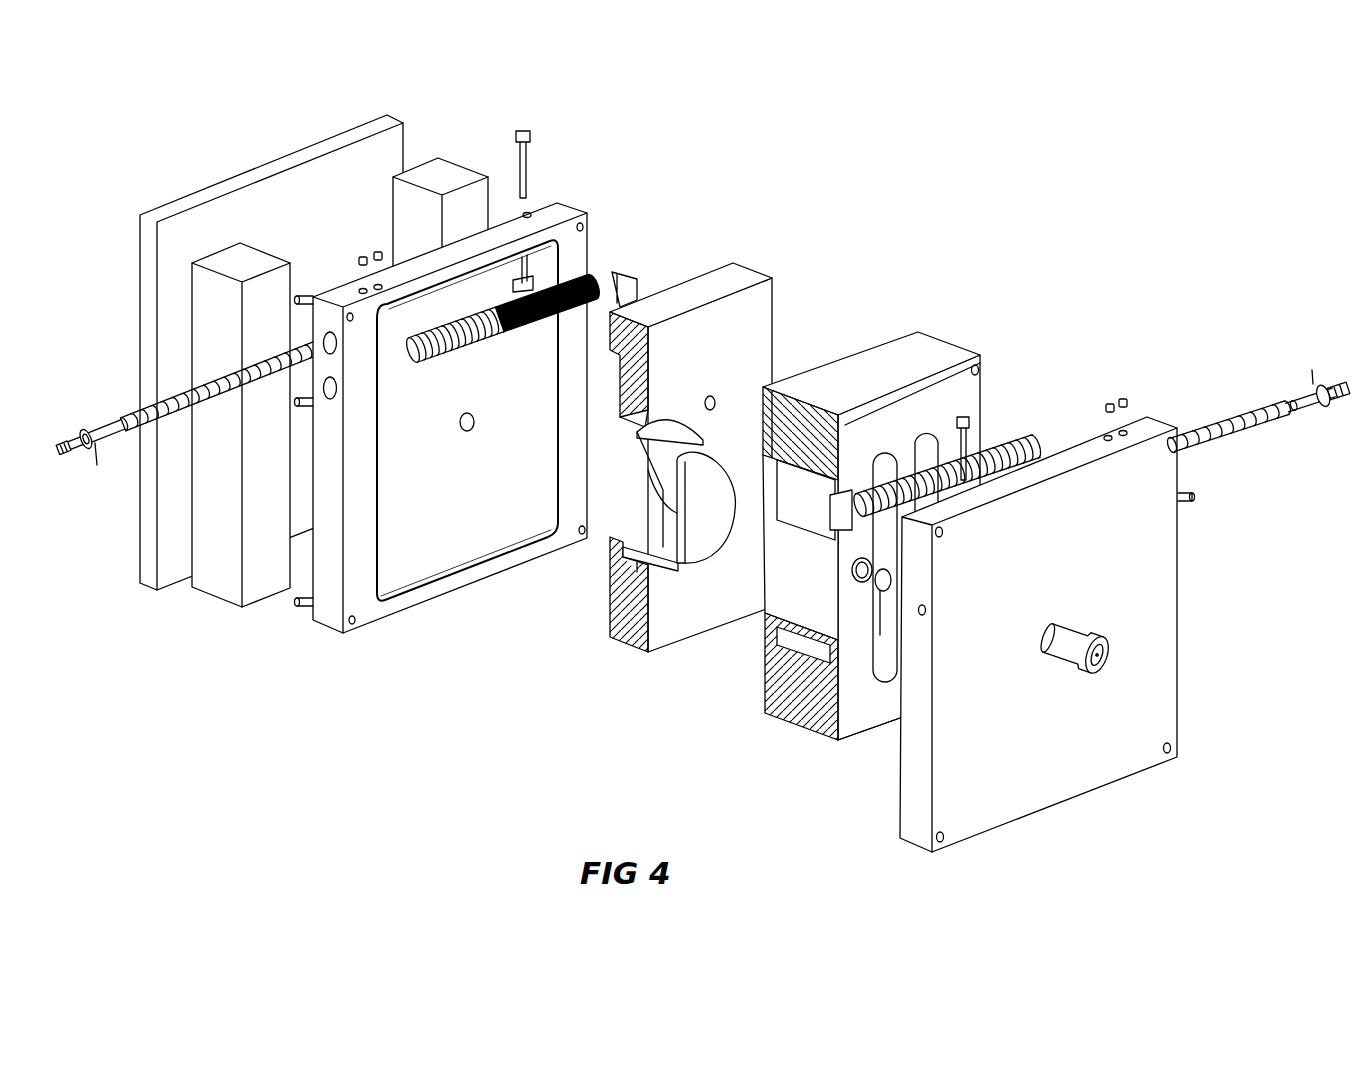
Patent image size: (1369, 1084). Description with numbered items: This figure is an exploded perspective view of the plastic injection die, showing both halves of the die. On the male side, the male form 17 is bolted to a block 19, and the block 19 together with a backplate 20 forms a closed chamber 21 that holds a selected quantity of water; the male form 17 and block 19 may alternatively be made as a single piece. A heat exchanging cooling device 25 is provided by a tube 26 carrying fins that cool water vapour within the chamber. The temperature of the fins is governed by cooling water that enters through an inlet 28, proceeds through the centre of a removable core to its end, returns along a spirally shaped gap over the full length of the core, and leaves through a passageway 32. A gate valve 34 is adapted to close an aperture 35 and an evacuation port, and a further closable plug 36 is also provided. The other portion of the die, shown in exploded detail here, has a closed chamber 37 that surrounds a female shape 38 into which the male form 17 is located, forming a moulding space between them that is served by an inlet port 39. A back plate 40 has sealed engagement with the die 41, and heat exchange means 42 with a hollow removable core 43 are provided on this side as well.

The male form 17 is at (700, 540).
The block 19 is at (752, 317).
The backplate 20 is at (333, 618).
The closed chamber 21 is at (620, 503).
The heat exchanging cooling device 25 is at (602, 268).
The tube 26 is at (503, 333).
The inlet 28 is at (88, 437).
The passageway 32 is at (293, 398).
The gate valve 34 is at (525, 172).
The aperture 35 is at (530, 207).
The closable plug 36 is at (378, 287).
The closed chamber 37 is at (822, 670).
The female shape 38 is at (783, 567).
The inlet port 39 is at (1110, 657).
The back plate 40 is at (1055, 752).
The die 41 is at (930, 352).
The heat exchange means 42 is at (1013, 432).
The hollow removable core 43 is at (1250, 425).